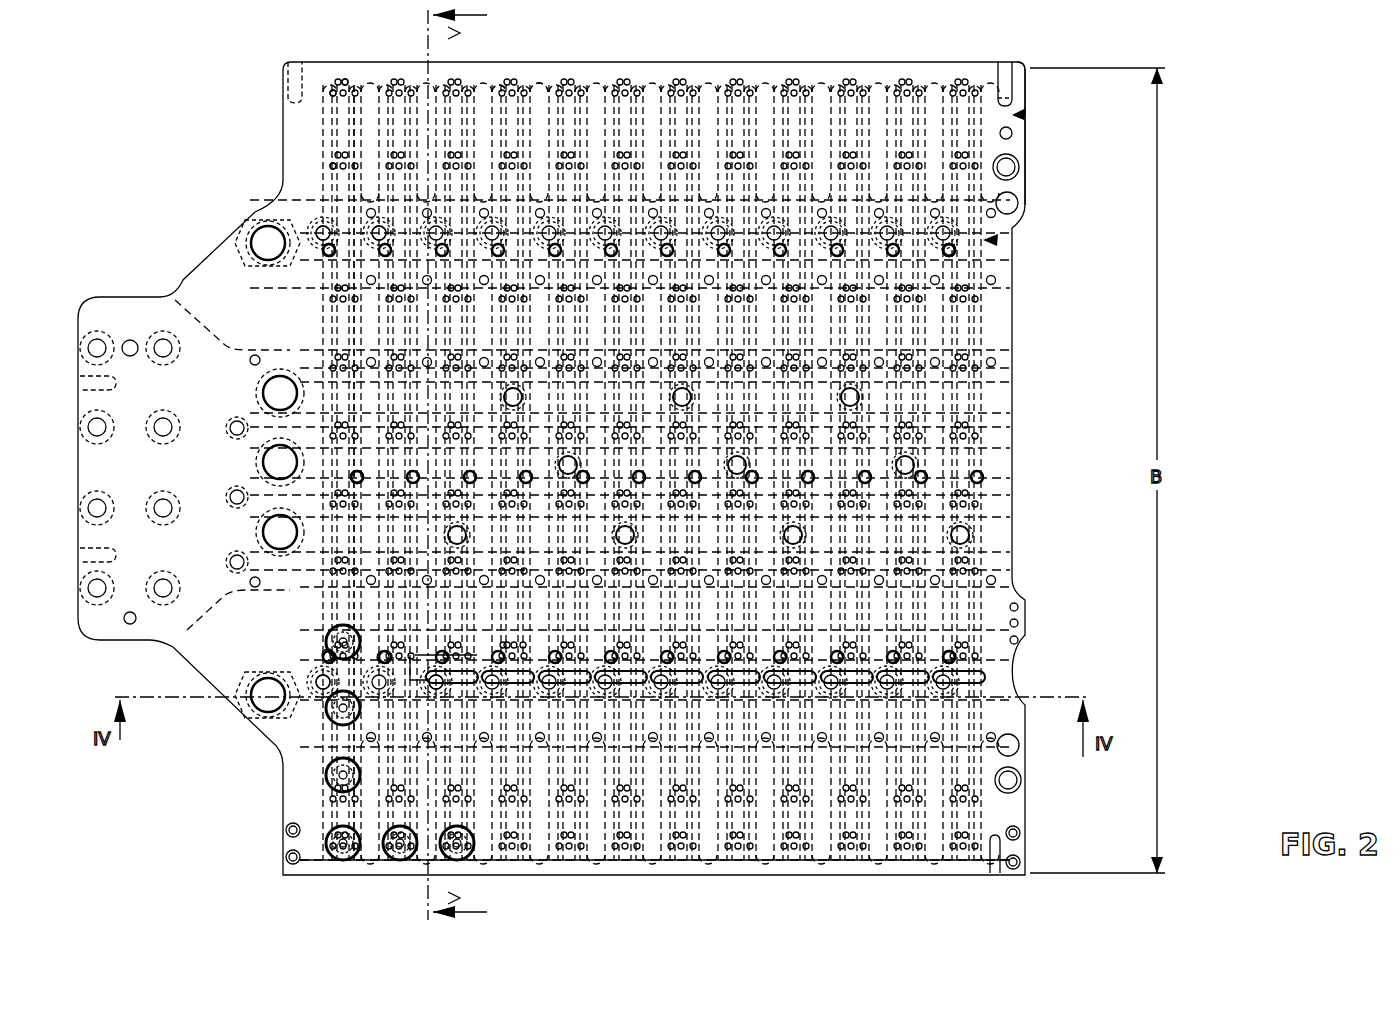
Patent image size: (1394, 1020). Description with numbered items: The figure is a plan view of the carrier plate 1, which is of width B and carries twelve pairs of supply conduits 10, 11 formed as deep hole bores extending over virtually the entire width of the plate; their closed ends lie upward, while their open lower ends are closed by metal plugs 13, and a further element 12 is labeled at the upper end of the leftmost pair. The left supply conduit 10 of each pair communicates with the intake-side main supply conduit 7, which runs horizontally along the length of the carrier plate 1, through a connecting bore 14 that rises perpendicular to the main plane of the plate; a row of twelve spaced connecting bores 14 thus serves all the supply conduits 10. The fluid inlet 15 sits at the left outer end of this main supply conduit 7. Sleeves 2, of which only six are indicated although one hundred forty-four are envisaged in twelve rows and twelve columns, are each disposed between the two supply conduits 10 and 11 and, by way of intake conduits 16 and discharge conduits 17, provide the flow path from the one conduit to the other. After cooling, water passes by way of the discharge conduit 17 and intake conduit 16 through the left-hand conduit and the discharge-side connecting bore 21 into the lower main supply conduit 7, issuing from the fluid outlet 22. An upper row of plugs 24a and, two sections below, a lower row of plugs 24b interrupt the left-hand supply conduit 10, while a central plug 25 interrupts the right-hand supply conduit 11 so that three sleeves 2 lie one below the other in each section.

The carrier plate 1 is at (1012, 115).
The sleeve 2 is at (327, 787).
The main supply conduit 7 is at (985, 240).
The supply conduit 10 is at (498, 88).
The supply conduit 11 is at (530, 90).
The bore 12 is at (343, 78).
The metal plug 13 is at (505, 868).
The connecting bore 14 is at (375, 233).
The fluid inlet 15 is at (265, 237).
The intake conduit 16 is at (333, 163).
The discharge conduit 17 is at (358, 85).
The discharge-side connecting bore 21 is at (433, 685).
The fluid outlet 22 is at (260, 687).
The plug 24a is at (327, 258).
The plug 24b is at (323, 682).
The plug 25 is at (355, 478).